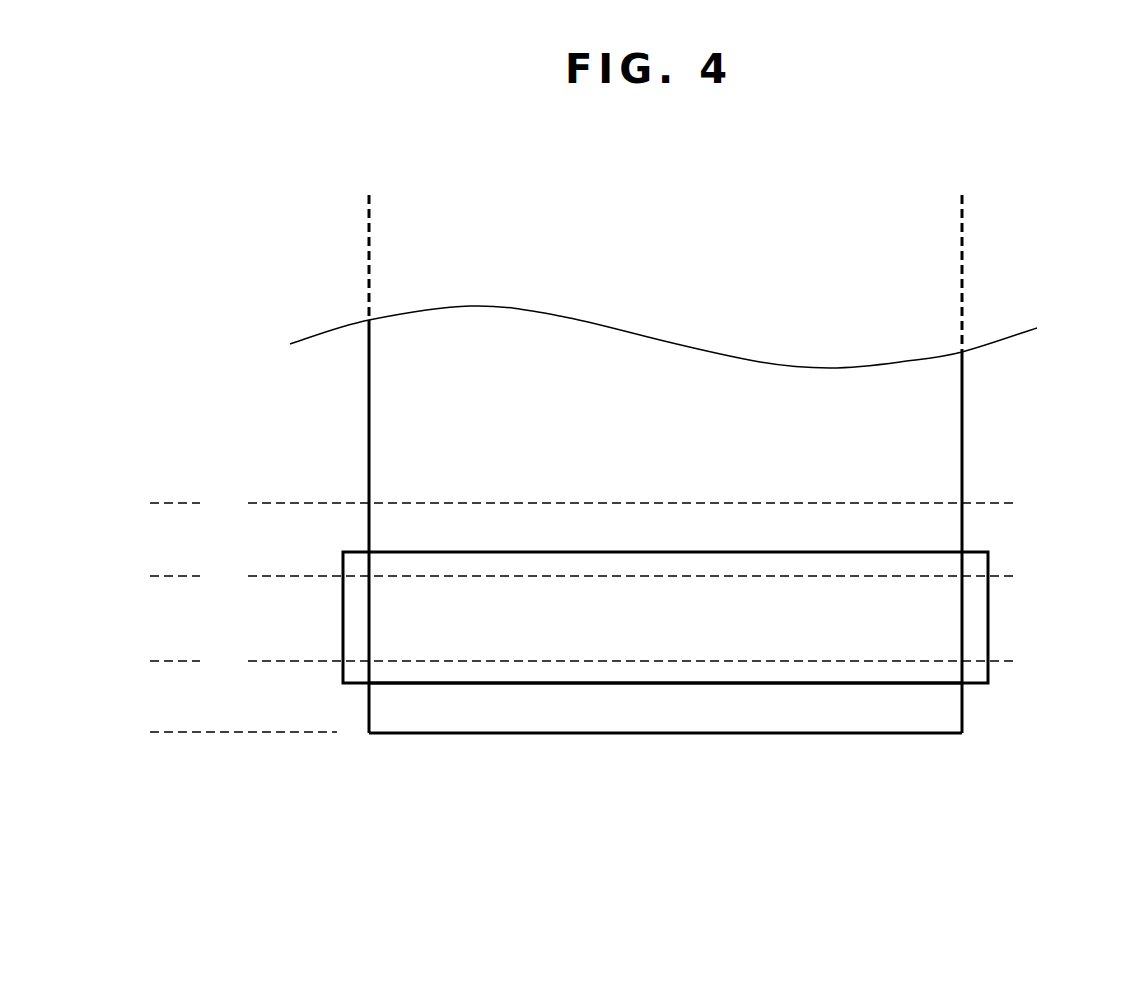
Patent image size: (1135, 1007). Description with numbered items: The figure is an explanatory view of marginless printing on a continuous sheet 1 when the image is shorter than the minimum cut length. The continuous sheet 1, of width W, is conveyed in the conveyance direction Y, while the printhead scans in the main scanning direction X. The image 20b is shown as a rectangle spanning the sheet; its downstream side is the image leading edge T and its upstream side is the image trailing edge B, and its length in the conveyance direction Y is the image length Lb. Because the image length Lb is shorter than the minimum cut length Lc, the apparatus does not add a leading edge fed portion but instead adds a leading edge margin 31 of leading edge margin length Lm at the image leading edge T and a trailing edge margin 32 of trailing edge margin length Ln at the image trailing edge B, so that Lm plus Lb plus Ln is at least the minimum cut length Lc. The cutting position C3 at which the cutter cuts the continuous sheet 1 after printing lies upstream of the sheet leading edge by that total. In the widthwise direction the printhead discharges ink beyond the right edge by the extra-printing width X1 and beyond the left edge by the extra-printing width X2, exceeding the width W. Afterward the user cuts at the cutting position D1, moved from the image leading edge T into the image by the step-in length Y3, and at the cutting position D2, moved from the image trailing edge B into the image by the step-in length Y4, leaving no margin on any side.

The continuous sheet 1 is at (630, 358).
The image 20b is at (938, 590).
The image trailing edge B is at (443, 552).
The image leading edge T is at (428, 683).
The trailing edge margin 32 is at (938, 525).
The leading edge margin 31 is at (938, 710).
The cutting position C3 is at (582, 503).
The cutting position D2 is at (582, 576).
The cutting position D1 is at (582, 661).
The width W is at (962, 217).
The minimum cut length Lc is at (172, 503).
The trailing edge margin length Ln is at (507, 503).
The image length Lb is at (507, 552).
The leading edge margin length Lm is at (507, 683).
The extra-printing width X1 is at (922, 639).
The extra-printing width X2 is at (408, 638).
The step-in length Y3 is at (747, 618).
The step-in length Y4 is at (786, 616).
The main scanning direction X is at (1052, 368).
The conveyance direction Y is at (1107, 493).